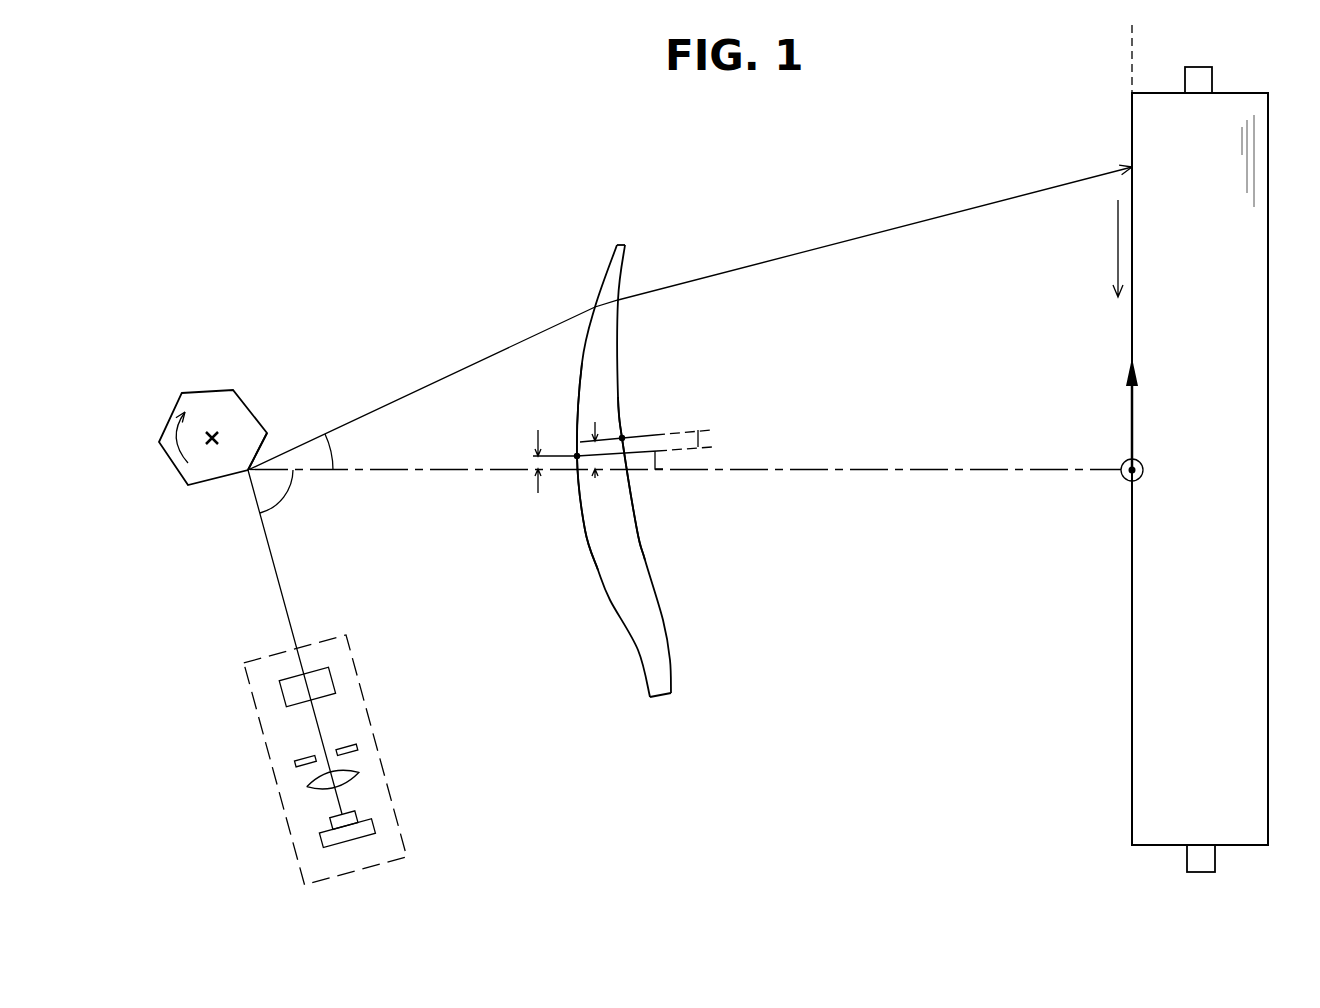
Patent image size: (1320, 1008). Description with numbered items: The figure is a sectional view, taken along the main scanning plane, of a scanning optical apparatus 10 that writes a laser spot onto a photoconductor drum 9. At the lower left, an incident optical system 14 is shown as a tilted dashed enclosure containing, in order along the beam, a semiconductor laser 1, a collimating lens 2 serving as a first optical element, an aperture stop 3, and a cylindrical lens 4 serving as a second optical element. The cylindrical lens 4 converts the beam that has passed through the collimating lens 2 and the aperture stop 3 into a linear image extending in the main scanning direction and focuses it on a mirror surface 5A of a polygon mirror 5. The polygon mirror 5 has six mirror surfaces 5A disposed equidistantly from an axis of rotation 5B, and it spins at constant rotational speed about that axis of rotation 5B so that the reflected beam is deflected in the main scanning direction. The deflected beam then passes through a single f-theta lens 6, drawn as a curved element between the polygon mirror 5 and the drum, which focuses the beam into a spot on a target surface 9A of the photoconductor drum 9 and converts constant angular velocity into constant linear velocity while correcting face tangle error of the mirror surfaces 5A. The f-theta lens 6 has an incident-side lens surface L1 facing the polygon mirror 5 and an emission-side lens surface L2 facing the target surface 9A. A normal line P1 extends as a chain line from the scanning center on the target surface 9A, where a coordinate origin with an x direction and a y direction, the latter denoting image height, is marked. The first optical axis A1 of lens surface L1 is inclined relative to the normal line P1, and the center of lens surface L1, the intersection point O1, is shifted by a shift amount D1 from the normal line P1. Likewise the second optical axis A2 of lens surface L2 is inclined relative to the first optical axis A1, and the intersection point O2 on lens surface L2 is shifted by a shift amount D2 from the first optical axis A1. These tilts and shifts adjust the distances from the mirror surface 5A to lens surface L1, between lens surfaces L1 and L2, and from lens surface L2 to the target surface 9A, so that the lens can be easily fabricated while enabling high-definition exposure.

The scanning optical apparatus 10 is at (332, 167).
The semiconductor laser 1 is at (373, 830).
The collimating lens 2 is at (359, 775).
The aperture stop 3 is at (356, 748).
The cylindrical lens 4 is at (336, 681).
The incident optical system 14 is at (268, 762).
The polygon mirror 5 is at (223, 397).
The mirror surface 5A is at (268, 443).
The axis of rotation 5B is at (212, 447).
The f-theta lens 6 is at (663, 697).
The incident-side lens surface L1 is at (597, 570).
The emission-side lens surface L2 is at (645, 557).
The intersection point O1 is at (576, 454).
The intersection point O2 is at (622, 436).
The shift amount D1 is at (537, 461).
The shift amount D2 is at (600, 431).
The first optical axis A1 is at (690, 450).
The second optical axis A2 is at (690, 432).
The normal line P1 is at (880, 468).
The photoconductor drum 9 is at (1240, 298).
The target surface 9A is at (1130, 52).
The x axis x is at (1122, 463).
The image height y is at (1120, 414).